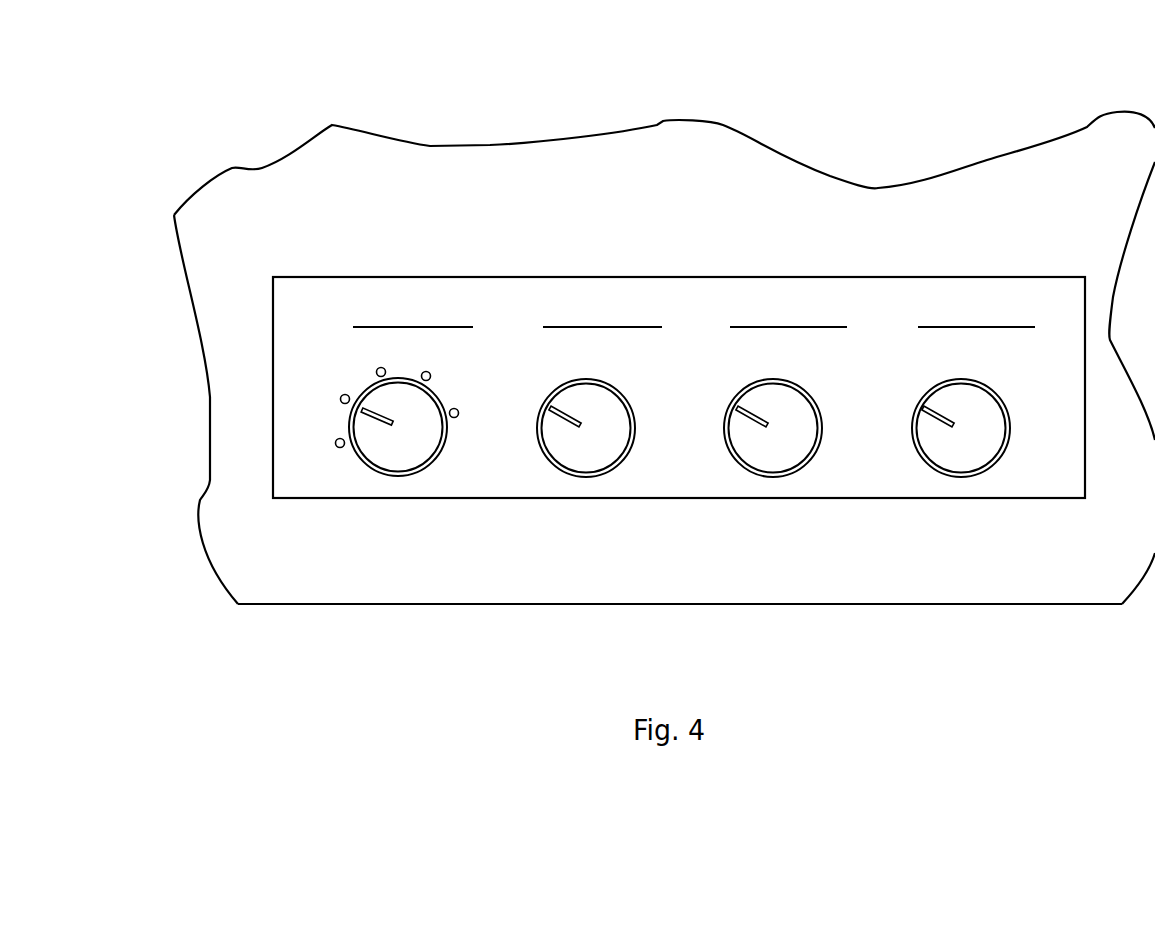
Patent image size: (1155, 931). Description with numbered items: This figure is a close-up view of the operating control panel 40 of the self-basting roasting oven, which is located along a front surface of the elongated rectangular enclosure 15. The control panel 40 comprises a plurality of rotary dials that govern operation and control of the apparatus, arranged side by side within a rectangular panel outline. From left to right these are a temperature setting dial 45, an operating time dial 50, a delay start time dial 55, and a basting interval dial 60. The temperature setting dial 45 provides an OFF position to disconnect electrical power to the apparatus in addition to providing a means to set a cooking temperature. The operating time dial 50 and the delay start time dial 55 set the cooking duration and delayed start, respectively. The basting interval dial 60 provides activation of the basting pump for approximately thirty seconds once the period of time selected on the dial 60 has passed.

The enclosure 15 is at (245, 103).
The operating control panel 40 is at (408, 277).
The temperature setting dial 45 is at (392, 455).
The operating time dial 50 is at (586, 443).
The delay start time dial 55 is at (773, 441).
The basting interval dial 60 is at (965, 443).